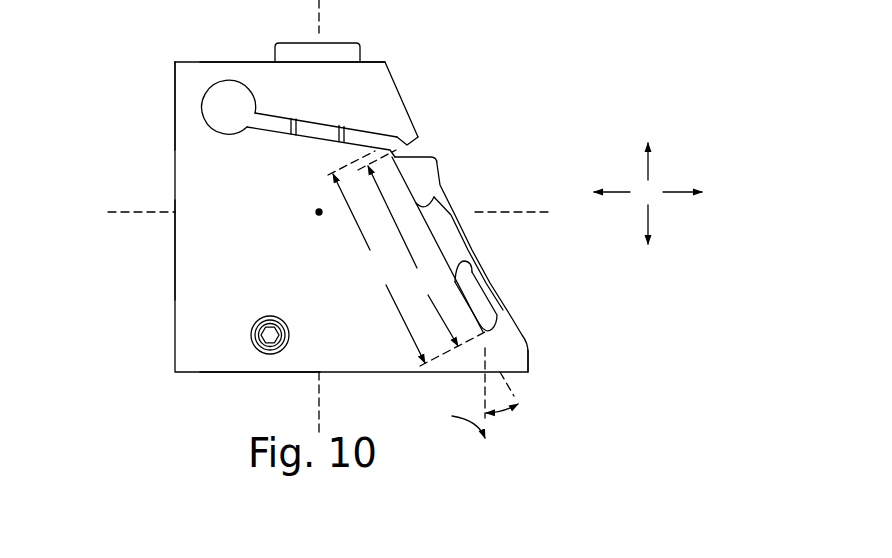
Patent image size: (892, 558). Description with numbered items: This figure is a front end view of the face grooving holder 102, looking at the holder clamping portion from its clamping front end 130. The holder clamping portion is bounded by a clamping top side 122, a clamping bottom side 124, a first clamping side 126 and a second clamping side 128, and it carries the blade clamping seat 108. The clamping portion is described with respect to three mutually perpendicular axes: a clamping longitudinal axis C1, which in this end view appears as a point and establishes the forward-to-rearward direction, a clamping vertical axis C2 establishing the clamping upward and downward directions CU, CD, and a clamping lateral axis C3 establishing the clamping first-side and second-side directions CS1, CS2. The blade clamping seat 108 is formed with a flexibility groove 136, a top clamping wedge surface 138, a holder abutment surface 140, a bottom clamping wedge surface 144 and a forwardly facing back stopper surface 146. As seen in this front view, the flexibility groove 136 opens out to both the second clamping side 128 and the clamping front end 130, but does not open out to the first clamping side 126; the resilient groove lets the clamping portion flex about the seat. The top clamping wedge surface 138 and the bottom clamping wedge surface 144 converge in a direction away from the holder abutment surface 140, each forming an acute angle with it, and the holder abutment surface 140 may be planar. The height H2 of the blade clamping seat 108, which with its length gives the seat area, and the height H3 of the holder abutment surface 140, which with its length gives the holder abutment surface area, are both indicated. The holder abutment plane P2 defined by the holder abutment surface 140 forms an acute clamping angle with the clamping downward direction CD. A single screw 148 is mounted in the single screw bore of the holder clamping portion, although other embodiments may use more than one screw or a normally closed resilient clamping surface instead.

The face grooving holder 102 is at (122, 44).
The clamping top side 122 is at (215, 51).
The clamping bottom side 124 is at (249, 379).
The first clamping side 126 is at (171, 241).
The clamping front end 130 is at (300, 255).
The flexibility groove 136 is at (276, 125).
The top clamping wedge surface 138 is at (410, 142).
The screw 148 is at (338, 53).
The second clamping side 128 is at (481, 230).
The blade clamping seat 108 is at (455, 154).
The forwardly facing back stopper surface 146 is at (447, 227).
The holder abutment surface 140 is at (464, 280).
The bottom clamping wedge surface 144 is at (491, 312).
The clamping longitudinal axis C1 is at (318, 210).
The clamping vertical axis C2 is at (318, 23).
The clamping lateral axis C3 is at (294, 208).
The height of the blade clamping seat H2 is at (407, 258).
The height of the holder abutment surface H3 is at (408, 248).
The holder abutment plane P2 is at (495, 363).
The clamping downward direction CD is at (452, 419).
The clamping upward direction CU is at (651, 190).
The clamping first-side direction CS1 is at (610, 177).
The clamping second-side direction CS2 is at (692, 177).